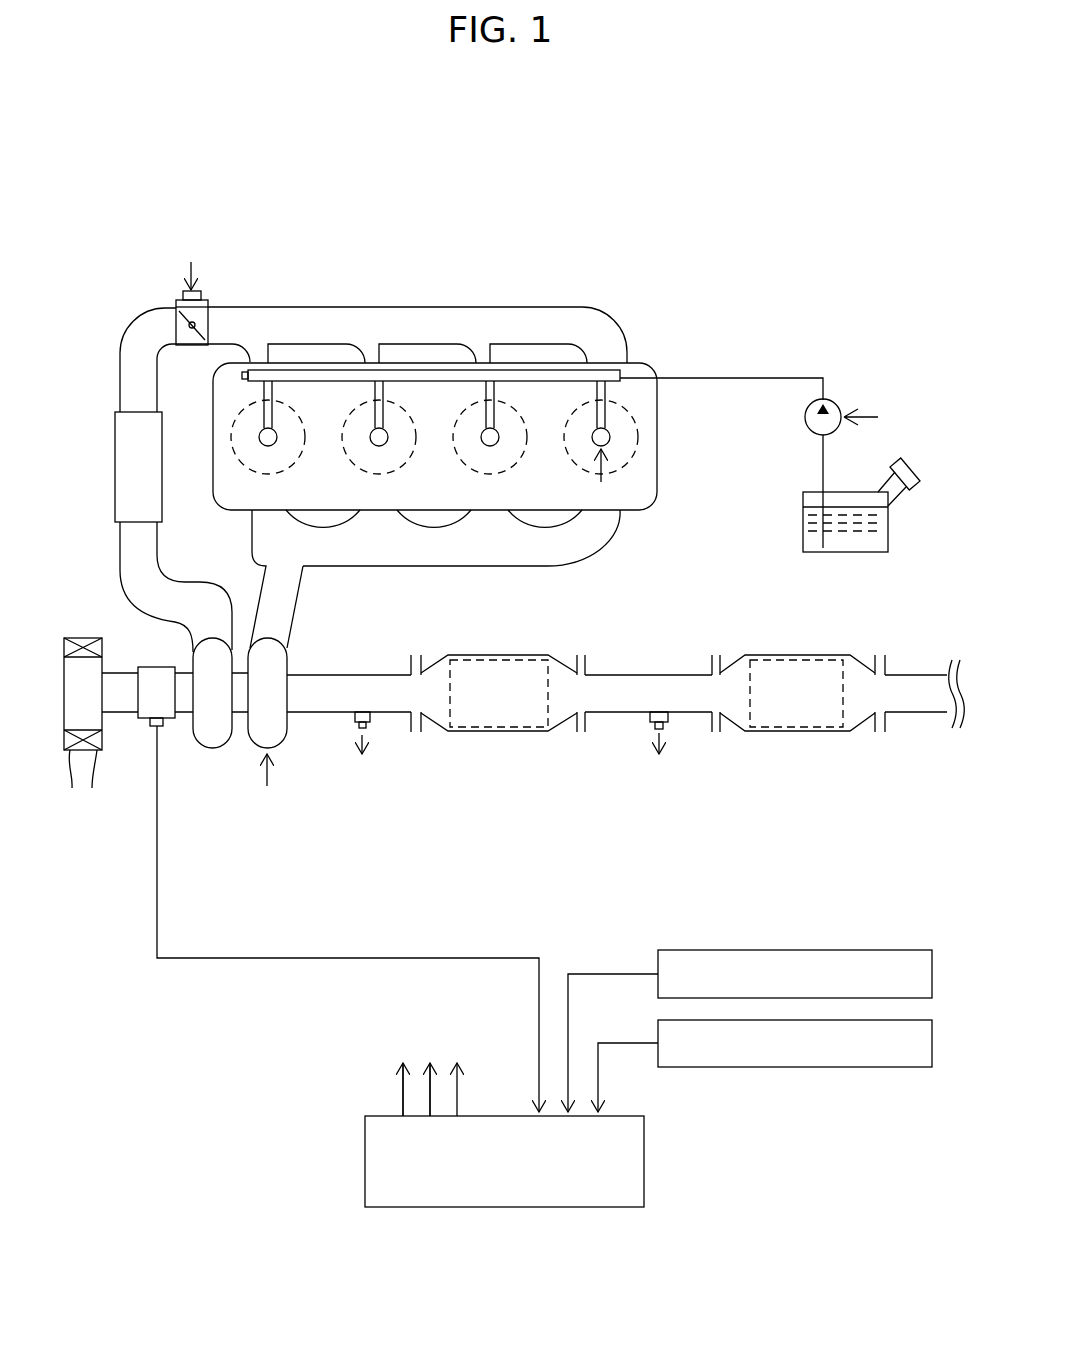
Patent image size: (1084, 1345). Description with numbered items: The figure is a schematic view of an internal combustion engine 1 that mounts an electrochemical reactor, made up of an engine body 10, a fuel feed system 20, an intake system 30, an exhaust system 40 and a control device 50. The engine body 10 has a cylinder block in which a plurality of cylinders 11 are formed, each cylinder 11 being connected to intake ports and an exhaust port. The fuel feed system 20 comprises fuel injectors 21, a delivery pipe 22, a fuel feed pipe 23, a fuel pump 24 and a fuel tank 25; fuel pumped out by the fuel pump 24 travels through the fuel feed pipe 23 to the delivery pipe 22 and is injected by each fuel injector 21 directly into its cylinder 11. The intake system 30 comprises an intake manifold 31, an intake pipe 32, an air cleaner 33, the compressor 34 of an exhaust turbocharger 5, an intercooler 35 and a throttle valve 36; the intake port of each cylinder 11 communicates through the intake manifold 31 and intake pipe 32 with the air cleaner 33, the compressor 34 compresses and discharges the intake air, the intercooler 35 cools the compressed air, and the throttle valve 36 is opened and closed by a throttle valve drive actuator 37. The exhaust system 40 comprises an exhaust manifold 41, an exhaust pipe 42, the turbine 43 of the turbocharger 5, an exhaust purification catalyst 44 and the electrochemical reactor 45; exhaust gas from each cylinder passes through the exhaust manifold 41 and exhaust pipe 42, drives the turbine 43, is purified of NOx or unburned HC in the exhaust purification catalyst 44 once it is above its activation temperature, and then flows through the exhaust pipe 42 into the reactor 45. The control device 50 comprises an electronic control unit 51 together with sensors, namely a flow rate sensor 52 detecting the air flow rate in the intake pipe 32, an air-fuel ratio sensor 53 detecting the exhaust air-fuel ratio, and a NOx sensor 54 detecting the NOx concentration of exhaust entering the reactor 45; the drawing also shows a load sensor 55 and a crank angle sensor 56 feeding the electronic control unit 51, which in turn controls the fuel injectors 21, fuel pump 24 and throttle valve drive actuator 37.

The internal combustion engine 1 is at (855, 205).
The exhaust turbocharger 5 is at (253, 748).
The engine body 10 is at (649, 360).
The cylinder 11 is at (638, 442).
The fuel feed system 20 is at (797, 360).
The fuel injector 21 is at (590, 440).
The delivery pipe 22 is at (602, 366).
The fuel feed pipe 23 is at (748, 378).
The fuel pump 24 is at (832, 402).
The fuel tank 25 is at (843, 555).
The intake system 30 is at (75, 368).
The intake manifold 31 is at (497, 307).
The intake pipe 32 is at (112, 672).
The air cleaner 33 is at (103, 740).
The compressor 34 is at (213, 740).
The intercooler 35 is at (115, 440).
The throttle valve 36 is at (207, 300).
The throttle valve drive actuator 37 is at (176, 306).
The exhaust system 40 is at (552, 594).
The exhaust manifold 41 is at (418, 566).
The exhaust pipe 42 is at (337, 675).
The turbine 43 is at (281, 726).
The exhaust purification catalyst 44 is at (483, 735).
The electrochemical reactor 45 is at (795, 730).
The control device 50 is at (632, 1239).
The electronic control unit 51 is at (387, 1116).
The flow rate sensor 52 is at (157, 667).
The air-fuel ratio sensor 53 is at (372, 725).
The NOx sensor 54 is at (668, 725).
The load sensor 55 is at (878, 950).
The crank angle sensor 56 is at (890, 1067).